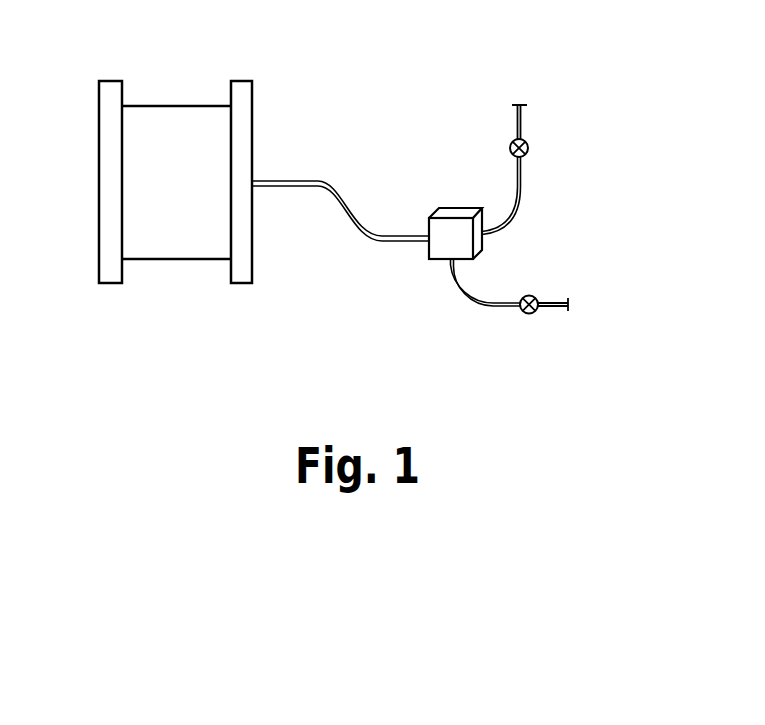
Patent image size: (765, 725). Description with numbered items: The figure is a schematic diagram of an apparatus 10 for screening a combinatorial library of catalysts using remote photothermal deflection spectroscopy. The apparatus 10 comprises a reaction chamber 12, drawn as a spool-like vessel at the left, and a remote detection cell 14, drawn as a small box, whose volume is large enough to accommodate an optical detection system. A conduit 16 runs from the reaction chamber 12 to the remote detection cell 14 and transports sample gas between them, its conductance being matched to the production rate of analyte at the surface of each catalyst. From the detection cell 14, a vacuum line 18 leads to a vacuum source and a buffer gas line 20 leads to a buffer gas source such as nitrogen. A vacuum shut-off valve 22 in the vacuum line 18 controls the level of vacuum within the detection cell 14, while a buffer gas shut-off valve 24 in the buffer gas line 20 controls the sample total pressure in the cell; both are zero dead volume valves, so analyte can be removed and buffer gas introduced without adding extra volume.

The apparatus 10 is at (555, 57).
The reaction chamber 12 is at (165, 106).
The remote detection cell 14 is at (434, 261).
The conduit 16 is at (322, 180).
The vacuum line 18 is at (493, 306).
The buffer gas line 20 is at (523, 203).
The vacuum shut-off valve 22 is at (537, 297).
The buffer gas shut-off valve 24 is at (530, 155).